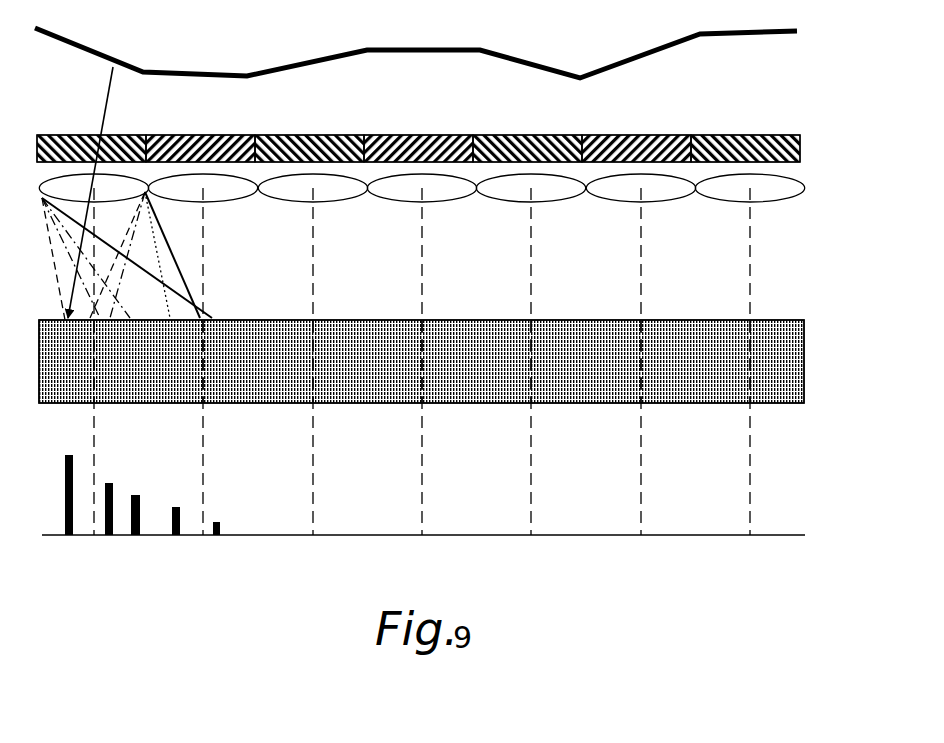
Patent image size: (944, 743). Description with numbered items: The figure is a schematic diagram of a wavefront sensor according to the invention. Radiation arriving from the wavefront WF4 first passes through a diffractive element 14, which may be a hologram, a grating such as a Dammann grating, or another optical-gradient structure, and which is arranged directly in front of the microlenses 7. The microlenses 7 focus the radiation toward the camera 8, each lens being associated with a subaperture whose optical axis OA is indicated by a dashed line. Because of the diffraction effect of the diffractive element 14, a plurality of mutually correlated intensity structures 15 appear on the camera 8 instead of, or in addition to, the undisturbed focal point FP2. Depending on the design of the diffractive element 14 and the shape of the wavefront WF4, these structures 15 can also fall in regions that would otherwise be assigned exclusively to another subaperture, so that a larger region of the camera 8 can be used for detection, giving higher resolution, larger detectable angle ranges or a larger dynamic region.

The diffractive element 14 is at (418, 85).
The microlenses 7 is at (421, 143).
The camera 8 is at (465, 391).
The intensity structures 15 is at (199, 529).
The wavefront WF4 is at (416, 59).
The optical axes OA is at (422, 361).
The undisturbed focal point FP2 is at (152, 565).